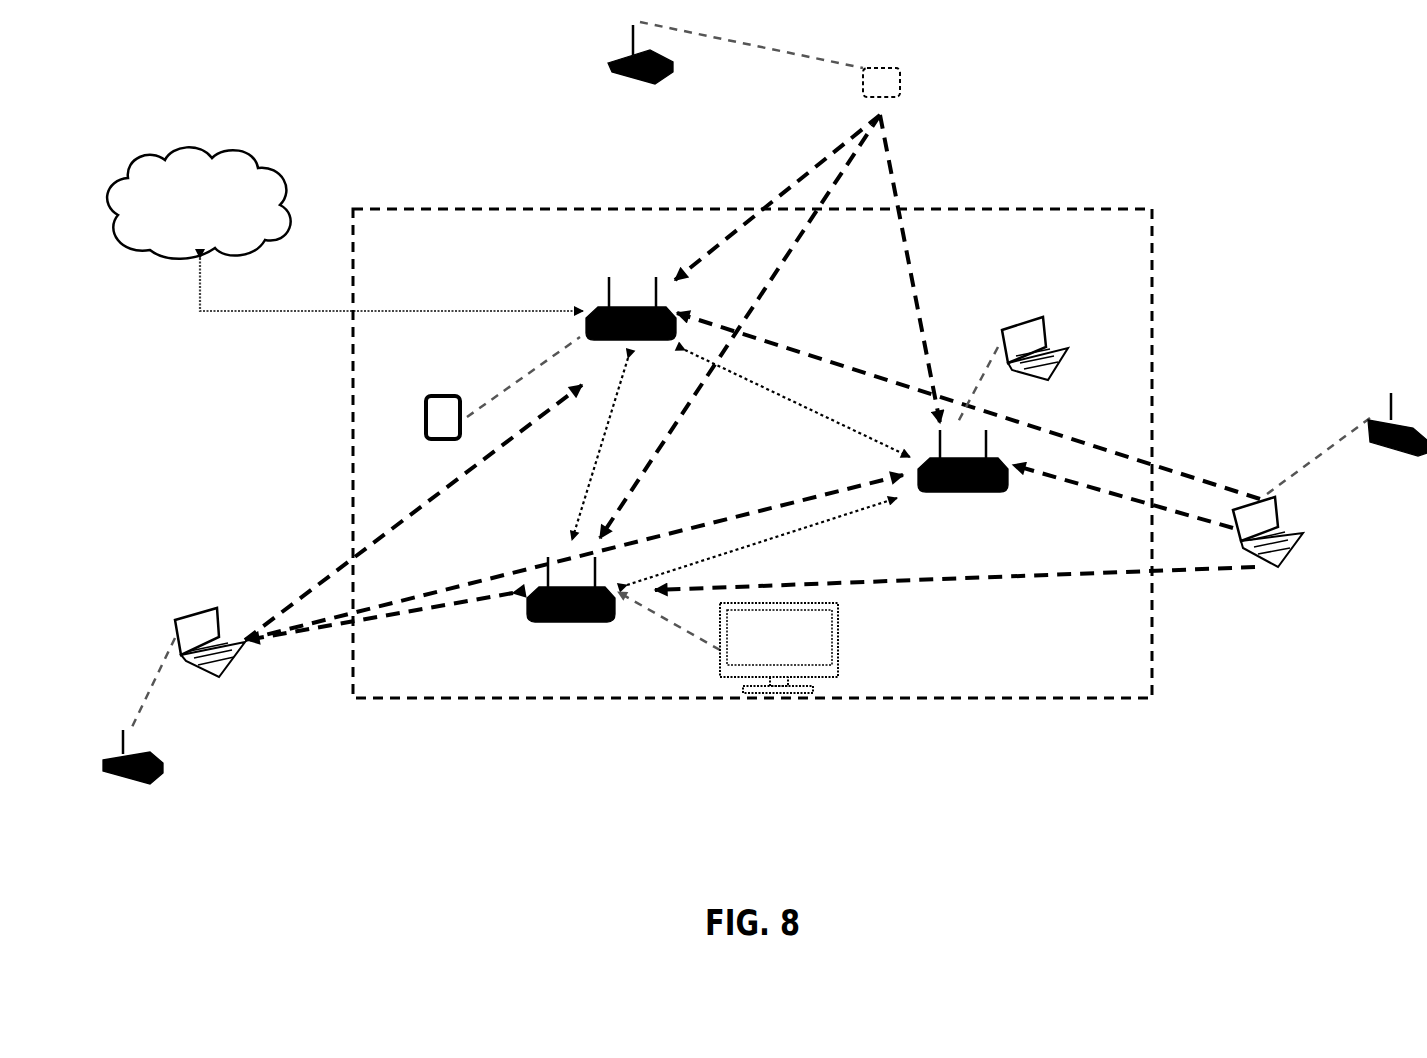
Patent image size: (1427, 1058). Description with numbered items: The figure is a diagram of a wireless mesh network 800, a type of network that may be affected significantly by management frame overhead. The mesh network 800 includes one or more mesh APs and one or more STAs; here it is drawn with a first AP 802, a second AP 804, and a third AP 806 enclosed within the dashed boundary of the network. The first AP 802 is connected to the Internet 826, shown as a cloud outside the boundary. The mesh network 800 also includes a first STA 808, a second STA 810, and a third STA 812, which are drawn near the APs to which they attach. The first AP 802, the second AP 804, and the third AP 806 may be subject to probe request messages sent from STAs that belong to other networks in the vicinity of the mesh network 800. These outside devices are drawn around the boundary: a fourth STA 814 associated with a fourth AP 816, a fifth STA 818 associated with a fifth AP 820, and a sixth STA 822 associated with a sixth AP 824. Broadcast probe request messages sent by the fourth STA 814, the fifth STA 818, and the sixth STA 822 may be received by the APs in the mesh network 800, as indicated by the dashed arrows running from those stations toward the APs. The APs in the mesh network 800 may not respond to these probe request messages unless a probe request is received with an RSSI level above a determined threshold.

The wireless mesh network 800 is at (752, 434).
The first AP 802 is at (631, 292).
The second AP 804 is at (570, 609).
The third AP 806 is at (963, 483).
The first STA 808 is at (421, 396).
The second STA 810 is at (814, 648).
The third STA 812 is at (1035, 327).
The fourth STA 814 is at (1291, 532).
The fourth AP 816 is at (1397, 401).
The fifth STA 818 is at (914, 87).
The fifth AP 820 is at (610, 54).
The sixth STA 822 is at (194, 622).
The sixth AP 824 is at (156, 774).
The Internet 826 is at (199, 186).